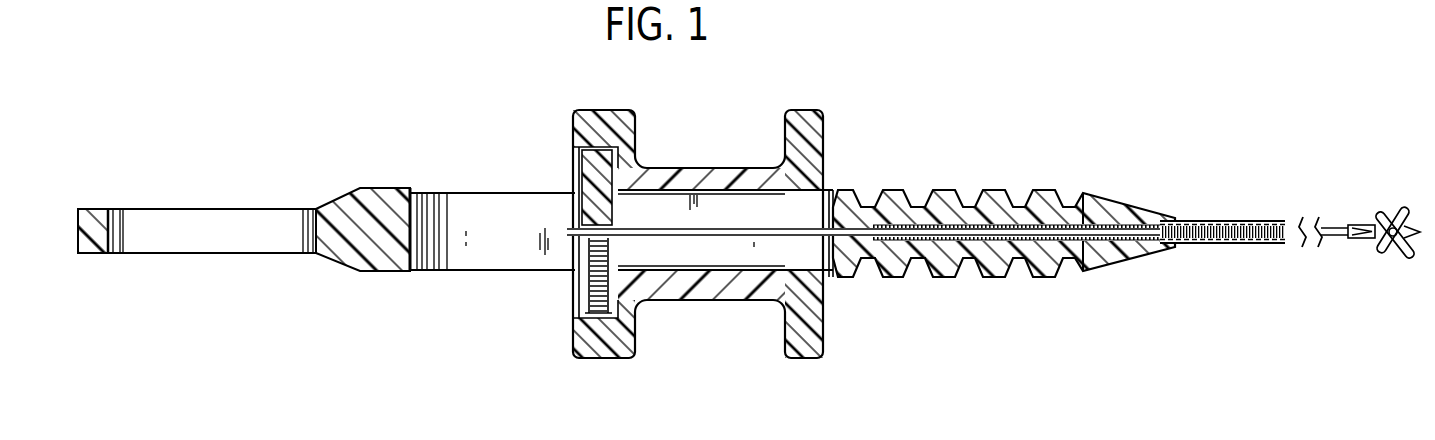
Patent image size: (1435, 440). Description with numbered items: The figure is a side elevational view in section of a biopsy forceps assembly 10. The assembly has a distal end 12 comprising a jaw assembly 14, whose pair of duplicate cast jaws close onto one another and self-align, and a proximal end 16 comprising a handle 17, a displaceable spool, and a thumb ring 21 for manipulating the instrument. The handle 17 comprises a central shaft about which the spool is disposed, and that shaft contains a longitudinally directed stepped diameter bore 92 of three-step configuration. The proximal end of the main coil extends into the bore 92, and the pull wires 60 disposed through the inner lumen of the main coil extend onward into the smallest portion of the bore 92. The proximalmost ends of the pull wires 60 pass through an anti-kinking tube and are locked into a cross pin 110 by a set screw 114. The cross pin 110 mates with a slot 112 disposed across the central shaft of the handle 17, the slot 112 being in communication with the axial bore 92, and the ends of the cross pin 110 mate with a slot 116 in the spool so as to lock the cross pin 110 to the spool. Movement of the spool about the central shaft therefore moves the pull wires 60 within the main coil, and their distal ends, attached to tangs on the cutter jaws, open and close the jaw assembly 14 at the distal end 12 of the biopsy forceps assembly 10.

The biopsy forceps assembly 10 is at (1271, 184).
The distal end 12 is at (1373, 277).
The jaw assembly 14 is at (1386, 192).
The proximal end 16 is at (611, 238).
The handle 17 is at (498, 217).
The thumb ring 21 is at (210, 255).
The pull wires 60 is at (670, 236).
The stepped diameter bore 92 is at (1155, 221).
The cross pin 110 is at (610, 161).
The slot 112 is at (538, 208).
The set screw 114 is at (586, 286).
The slot in the spool 116 is at (577, 158).